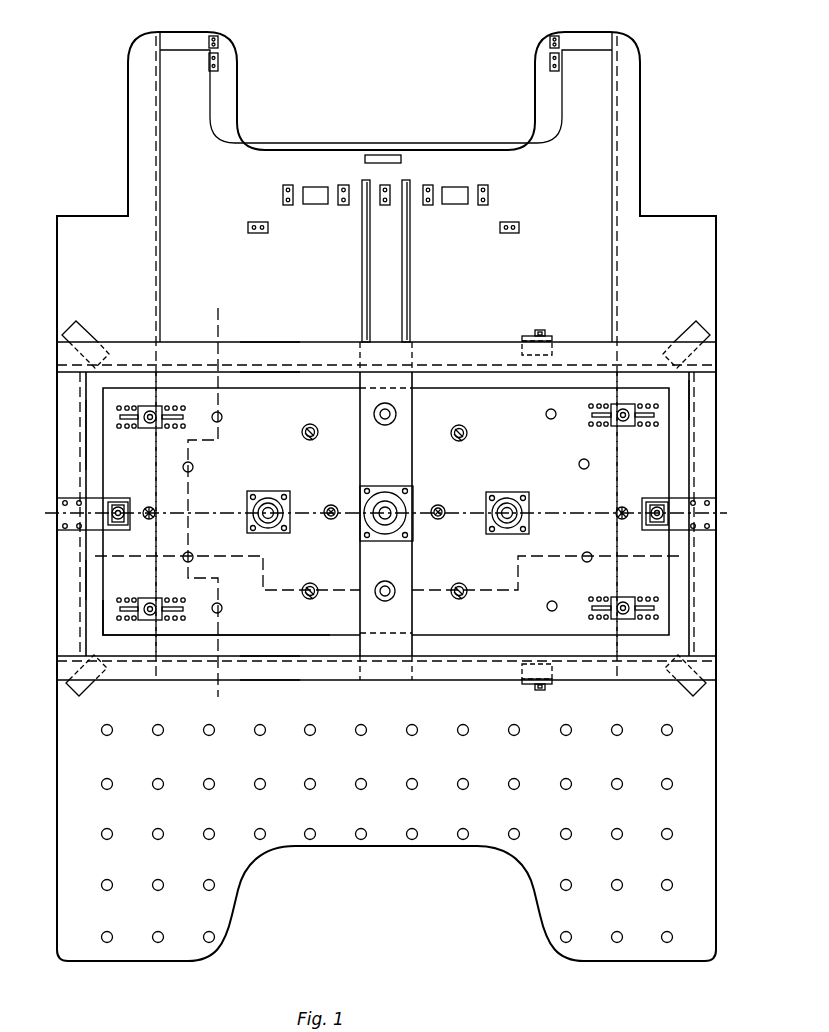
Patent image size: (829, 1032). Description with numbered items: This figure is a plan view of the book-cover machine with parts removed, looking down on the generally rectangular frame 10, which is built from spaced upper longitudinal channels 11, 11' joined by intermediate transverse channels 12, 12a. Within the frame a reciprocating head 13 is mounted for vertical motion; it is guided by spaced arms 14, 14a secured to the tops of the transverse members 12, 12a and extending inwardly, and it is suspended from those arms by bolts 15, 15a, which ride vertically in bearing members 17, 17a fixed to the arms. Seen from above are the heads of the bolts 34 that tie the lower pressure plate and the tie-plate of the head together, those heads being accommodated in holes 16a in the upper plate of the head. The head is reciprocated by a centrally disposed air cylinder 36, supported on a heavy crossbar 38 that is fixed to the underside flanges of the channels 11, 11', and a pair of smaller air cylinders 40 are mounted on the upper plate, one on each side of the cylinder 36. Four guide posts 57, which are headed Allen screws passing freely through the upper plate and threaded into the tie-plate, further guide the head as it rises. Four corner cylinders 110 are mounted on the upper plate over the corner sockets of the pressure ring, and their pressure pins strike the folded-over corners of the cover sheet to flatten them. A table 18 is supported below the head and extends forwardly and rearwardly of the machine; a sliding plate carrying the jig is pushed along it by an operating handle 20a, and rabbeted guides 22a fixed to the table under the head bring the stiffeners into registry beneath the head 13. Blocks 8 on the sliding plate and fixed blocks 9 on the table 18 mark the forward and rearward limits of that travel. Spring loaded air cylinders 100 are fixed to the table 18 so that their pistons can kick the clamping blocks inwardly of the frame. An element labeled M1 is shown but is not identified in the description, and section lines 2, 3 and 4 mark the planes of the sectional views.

The block 8 is at (219, 62).
The fixed block 9 is at (213, 37).
The frame 10 is at (55, 564).
The upper longitudinal channel 11 is at (270, 681).
The upper longitudinal channel 11' is at (270, 357).
The transverse member 12 is at (80, 451).
The transverse member 12a is at (705, 405).
The reciprocating head 13 is at (100, 621).
The arm 14 is at (95, 503).
The arm 14a is at (690, 528).
The bolt 15 is at (118, 525).
The bolt 15a is at (648, 518).
The hole 16a is at (329, 519).
The bearing member 17 is at (128, 503).
The bearing member 17a is at (655, 500).
The table 18 is at (75, 227).
The operating handle 20a is at (384, 155).
The rabbeted guide 22a is at (163, 370).
The bolt 34 is at (331, 504).
The air cylinder 36 is at (401, 507).
The crossbar 38 is at (383, 605).
The air cylinder 40 is at (248, 500).
The guide post 57 is at (310, 441).
The spring loaded air cylinder 100 is at (80, 330).
The corner cylinder 110 is at (148, 428).
The motor mount M1 is at (547, 329).
The section line 2- 2 is at (45, 513).
The section line 3- 3 is at (218, 308).
The section line 4- 4 is at (95, 542).